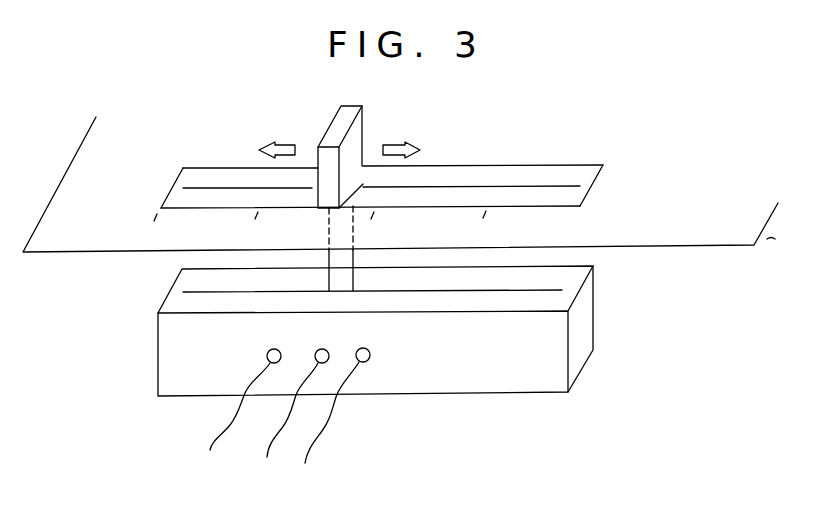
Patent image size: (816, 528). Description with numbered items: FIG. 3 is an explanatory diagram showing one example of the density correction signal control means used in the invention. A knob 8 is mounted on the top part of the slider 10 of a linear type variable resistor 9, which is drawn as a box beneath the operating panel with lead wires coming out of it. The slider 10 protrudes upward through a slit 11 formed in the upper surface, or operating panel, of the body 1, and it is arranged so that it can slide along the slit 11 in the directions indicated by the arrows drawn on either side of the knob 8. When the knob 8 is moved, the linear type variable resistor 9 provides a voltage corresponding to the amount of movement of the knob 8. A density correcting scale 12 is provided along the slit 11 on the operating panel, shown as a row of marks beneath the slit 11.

The body 1 is at (722, 233).
The knob 8 is at (337, 123).
The linear type variable resistor 9 is at (596, 308).
The slider 10 is at (329, 262).
The slit 11 is at (514, 186).
The density correcting scale 12 is at (579, 208).